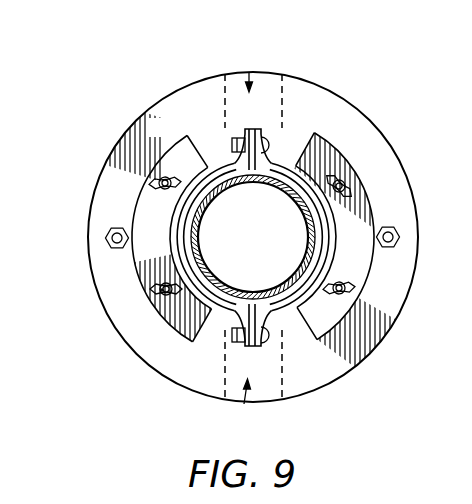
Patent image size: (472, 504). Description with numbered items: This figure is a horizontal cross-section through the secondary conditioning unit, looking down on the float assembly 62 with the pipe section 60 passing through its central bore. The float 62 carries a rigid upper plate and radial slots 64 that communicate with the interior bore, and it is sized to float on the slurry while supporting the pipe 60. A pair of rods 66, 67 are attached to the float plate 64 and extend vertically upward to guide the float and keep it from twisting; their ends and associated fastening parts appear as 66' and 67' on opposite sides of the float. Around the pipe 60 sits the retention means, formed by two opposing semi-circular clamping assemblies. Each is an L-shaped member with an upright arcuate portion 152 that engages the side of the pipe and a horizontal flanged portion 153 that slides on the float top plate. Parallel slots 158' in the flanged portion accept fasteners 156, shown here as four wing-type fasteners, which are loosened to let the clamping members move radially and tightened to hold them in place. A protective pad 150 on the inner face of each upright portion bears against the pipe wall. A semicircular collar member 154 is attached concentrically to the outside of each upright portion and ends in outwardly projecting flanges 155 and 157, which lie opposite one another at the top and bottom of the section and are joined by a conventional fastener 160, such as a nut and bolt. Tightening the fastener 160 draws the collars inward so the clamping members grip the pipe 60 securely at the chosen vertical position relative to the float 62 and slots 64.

The pipe section 60 is at (213, 282).
The float assembly 62 is at (340, 80).
The slots 64 is at (258, 63).
The rod 66 is at (88, 225).
The bolt 66' is at (83, 234).
The rod 67 is at (414, 228).
The bolt 67' is at (421, 243).
The protective pad 150 is at (203, 162).
The arcuate-shaped upright portion 152 is at (196, 180).
The flanged portion 153 is at (158, 267).
The collar member 154 is at (175, 225).
The flange 155 is at (260, 352).
The fasteners 156 is at (149, 183).
The flange 157 is at (246, 347).
The parallel slots 158' is at (130, 287).
The fastener 160 is at (270, 340).